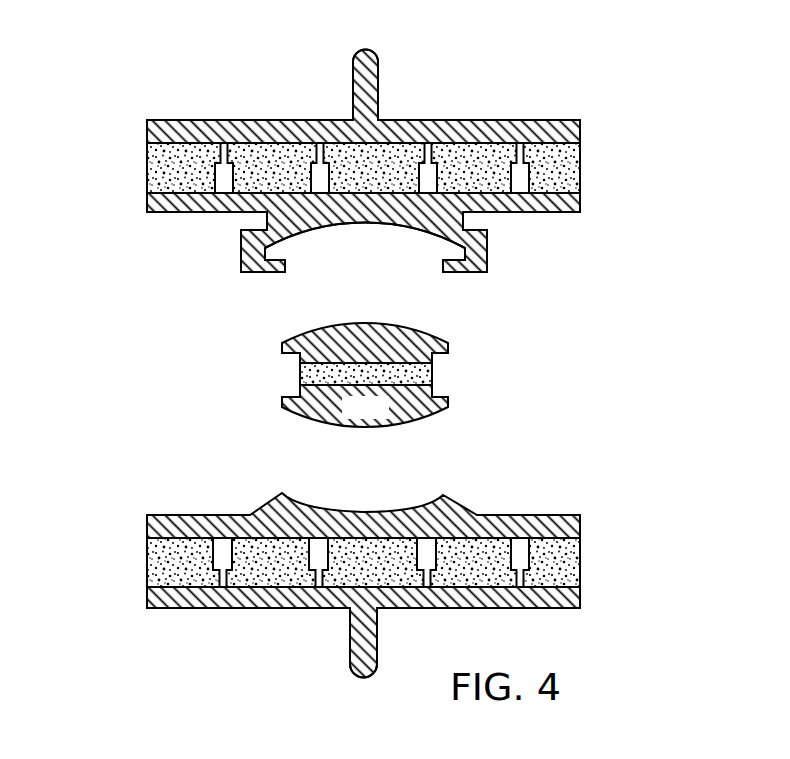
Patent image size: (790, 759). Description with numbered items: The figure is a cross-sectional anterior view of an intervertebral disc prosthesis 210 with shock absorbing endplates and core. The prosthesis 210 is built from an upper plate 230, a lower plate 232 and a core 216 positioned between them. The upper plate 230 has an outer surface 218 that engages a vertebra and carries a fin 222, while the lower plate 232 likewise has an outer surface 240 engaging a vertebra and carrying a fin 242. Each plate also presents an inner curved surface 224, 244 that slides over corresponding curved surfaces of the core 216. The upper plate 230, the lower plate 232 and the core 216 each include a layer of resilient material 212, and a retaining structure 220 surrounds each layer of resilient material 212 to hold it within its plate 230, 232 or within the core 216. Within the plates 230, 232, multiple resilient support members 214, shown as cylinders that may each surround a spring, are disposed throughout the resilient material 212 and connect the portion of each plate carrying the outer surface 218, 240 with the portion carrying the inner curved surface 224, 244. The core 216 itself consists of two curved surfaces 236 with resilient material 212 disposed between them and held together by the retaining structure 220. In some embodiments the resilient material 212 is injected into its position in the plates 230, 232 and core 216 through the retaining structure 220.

The intervertebral disc prosthesis 210 is at (325, 158).
The layer of resilient material 212 is at (570, 178).
The resilient support members 214 is at (207, 181).
The core 216 is at (388, 418).
The outer surface 218 is at (529, 116).
The retaining structure 220 is at (588, 159).
The fin 222 is at (390, 79).
The inner curved surface 224 is at (412, 234).
The upper plate 230 is at (176, 236).
The lower plate 232 is at (336, 563).
The curved surfaces 236 is at (296, 375).
The outer surface 240 is at (200, 614).
The fin 242 is at (344, 634).
The inner curved surface 244 is at (378, 503).